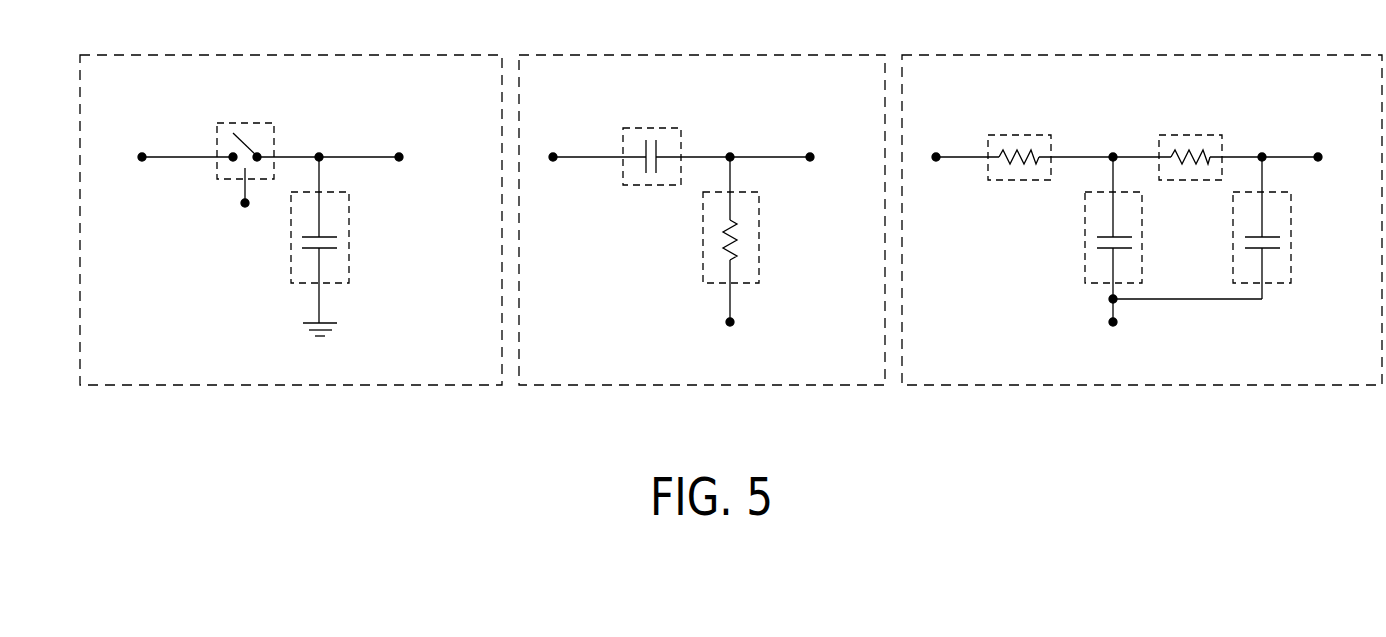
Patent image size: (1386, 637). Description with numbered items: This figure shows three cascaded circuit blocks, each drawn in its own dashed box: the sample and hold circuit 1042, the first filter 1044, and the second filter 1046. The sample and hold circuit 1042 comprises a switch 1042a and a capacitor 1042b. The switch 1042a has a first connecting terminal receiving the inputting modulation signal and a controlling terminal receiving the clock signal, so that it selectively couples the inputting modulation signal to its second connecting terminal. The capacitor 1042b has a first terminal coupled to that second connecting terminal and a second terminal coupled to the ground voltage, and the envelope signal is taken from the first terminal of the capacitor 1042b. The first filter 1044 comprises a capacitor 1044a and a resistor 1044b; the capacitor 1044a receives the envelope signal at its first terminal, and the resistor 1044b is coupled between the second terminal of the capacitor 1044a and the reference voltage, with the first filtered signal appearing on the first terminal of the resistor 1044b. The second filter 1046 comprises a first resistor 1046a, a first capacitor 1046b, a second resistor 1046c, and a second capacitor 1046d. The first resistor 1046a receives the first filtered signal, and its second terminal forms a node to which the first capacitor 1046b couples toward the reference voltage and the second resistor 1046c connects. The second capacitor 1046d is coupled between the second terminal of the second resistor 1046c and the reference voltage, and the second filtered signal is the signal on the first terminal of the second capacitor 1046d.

The sample and hold circuit 1042 is at (342, 53).
The switch 1042a is at (255, 123).
The capacitor 1042b is at (349, 209).
The first filter 1044 is at (782, 53).
The capacitor 1044a is at (662, 128).
The resistor 1044b is at (760, 209).
The second filter 1046 is at (1227, 53).
The first resistor 1046a is at (1029, 134).
The first capacitor 1046b is at (1085, 263).
The second resistor 1046c is at (1201, 134).
The second capacitor 1046d is at (1291, 212).